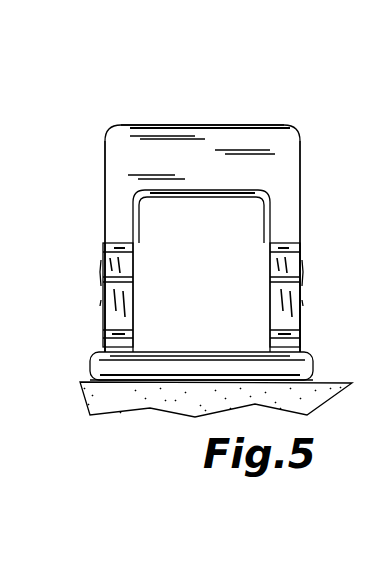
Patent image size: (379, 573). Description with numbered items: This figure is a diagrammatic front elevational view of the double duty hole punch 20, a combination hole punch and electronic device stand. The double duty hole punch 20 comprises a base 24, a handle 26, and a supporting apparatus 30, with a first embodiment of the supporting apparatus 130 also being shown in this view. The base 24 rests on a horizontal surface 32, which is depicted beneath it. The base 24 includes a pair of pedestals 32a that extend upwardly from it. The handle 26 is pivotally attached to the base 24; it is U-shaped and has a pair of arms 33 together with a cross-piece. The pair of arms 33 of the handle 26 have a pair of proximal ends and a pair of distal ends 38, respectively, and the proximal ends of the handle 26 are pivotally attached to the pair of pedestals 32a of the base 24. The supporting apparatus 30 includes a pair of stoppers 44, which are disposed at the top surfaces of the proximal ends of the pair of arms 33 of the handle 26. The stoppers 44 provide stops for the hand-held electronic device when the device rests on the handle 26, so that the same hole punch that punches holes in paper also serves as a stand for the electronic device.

The double duty hole punch 20 is at (112, 90).
The handle 26 is at (210, 118).
The distal ends 38 is at (121, 183).
The arms 33 is at (283, 208).
The supporting apparatus 30 is at (288, 237).
The supporting apparatus 130 is at (202, 297).
The stoppers 44 is at (108, 262).
The pedestals 32a is at (256, 343).
The horizontal surface 32 is at (128, 410).
The base 24 is at (175, 393).